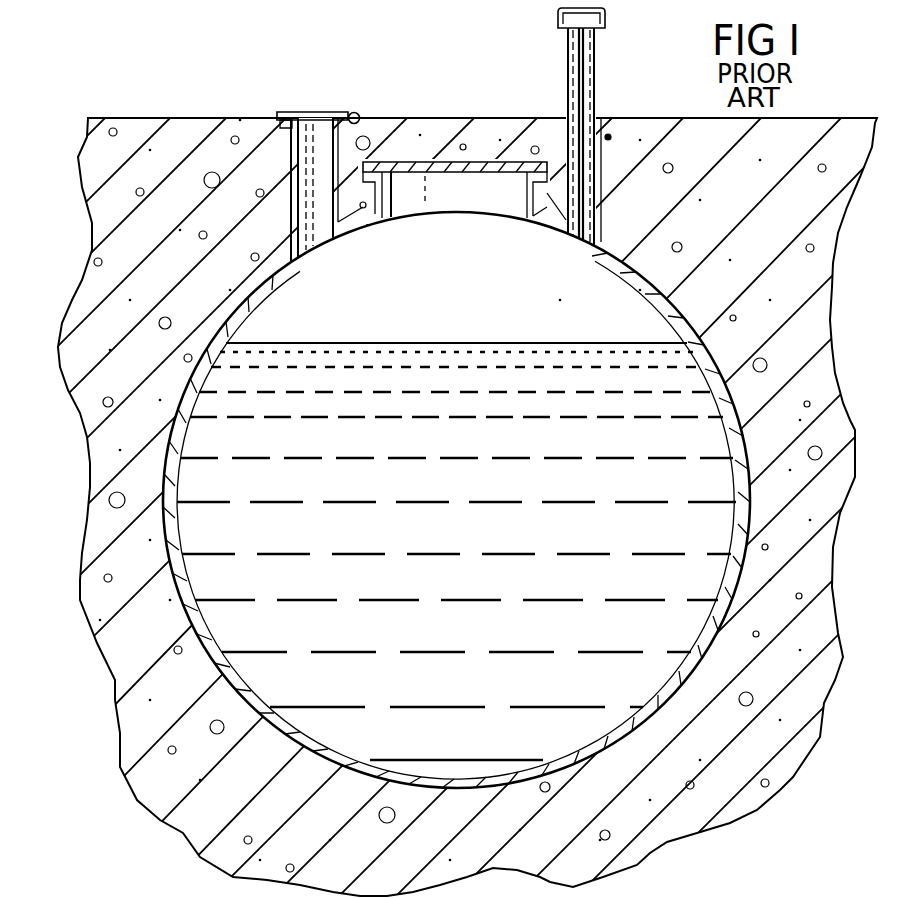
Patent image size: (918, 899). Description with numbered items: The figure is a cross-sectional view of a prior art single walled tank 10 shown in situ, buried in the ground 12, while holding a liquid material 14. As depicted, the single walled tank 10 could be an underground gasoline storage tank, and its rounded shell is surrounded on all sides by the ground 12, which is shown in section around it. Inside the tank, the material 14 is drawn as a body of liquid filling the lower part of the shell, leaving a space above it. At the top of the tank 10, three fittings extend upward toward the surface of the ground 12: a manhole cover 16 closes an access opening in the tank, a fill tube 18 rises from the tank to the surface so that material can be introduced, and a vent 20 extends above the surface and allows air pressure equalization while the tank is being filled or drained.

The single walled tank 10 is at (112, 700).
The ground 12 is at (803, 663).
The material 14 is at (466, 540).
The manhole cover 16 is at (457, 165).
The fill tube 18 is at (314, 130).
The vent 20 is at (568, 76).